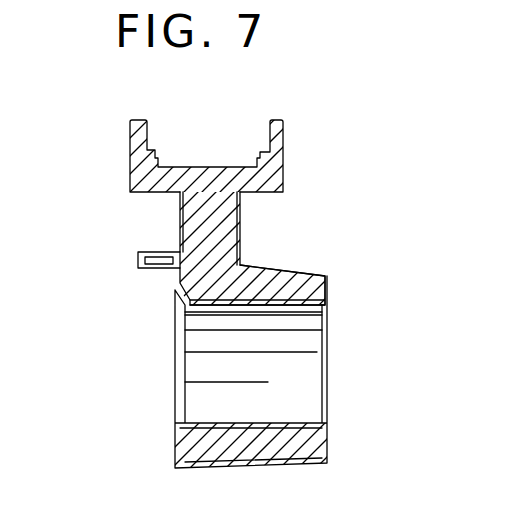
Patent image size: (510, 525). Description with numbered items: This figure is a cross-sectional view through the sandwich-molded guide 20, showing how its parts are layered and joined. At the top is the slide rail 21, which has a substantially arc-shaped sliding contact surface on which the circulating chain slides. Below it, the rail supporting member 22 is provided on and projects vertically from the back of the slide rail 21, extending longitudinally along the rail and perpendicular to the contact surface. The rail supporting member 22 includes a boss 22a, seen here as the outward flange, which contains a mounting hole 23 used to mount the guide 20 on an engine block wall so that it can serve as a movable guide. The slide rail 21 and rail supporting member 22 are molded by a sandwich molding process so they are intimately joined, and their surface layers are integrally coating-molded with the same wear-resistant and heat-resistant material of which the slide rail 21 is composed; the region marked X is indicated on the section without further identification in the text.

The sandwich-molded guide 20 is at (126, 222).
The slide rail 21 is at (285, 157).
The rail supporting member 22 is at (220, 234).
The boss 22a is at (287, 280).
The mounting hole 23 is at (294, 424).
The portion X is at (213, 165).